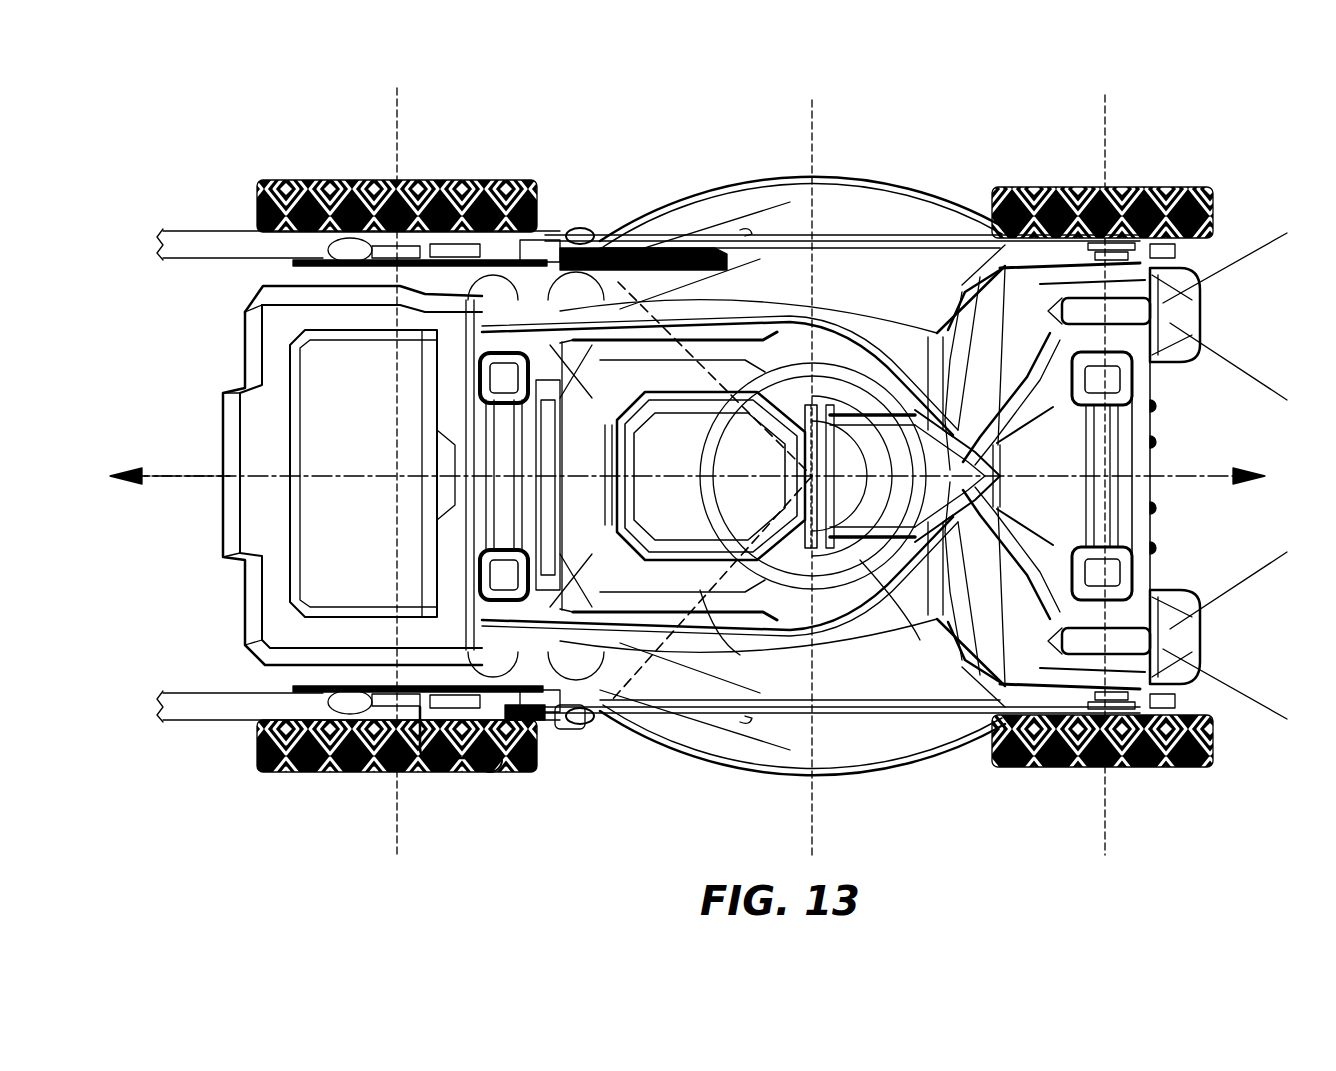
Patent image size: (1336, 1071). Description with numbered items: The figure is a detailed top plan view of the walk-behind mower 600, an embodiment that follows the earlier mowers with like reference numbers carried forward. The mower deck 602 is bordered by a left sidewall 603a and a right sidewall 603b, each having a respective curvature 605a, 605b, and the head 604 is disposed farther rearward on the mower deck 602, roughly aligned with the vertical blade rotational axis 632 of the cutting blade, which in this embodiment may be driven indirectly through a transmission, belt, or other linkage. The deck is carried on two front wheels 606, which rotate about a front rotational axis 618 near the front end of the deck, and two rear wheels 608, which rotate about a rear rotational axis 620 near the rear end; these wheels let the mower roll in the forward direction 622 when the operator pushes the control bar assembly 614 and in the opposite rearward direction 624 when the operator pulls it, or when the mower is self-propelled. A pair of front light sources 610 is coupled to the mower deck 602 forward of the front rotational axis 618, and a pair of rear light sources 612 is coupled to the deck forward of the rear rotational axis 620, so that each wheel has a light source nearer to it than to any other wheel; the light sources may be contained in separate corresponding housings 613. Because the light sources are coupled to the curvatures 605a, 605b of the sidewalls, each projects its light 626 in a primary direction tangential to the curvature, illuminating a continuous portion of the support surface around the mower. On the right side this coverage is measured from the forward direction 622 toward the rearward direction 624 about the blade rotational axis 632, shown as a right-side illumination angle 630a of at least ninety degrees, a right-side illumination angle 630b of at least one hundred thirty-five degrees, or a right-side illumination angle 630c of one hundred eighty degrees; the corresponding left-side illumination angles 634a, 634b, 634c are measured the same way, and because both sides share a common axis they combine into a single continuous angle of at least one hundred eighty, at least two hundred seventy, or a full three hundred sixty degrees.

The walk-behind mower 600 is at (286, 104).
The mower deck 602 is at (936, 655).
The left sidewall 603a is at (838, 182).
The right sidewall 603b is at (836, 780).
The head 604 is at (692, 628).
The curvature of left sidewall 605a is at (718, 190).
The curvature of right sidewall 605b is at (735, 762).
The front wheels 606 is at (1180, 188).
The rear wheels 608 is at (322, 180).
The front light sources 610 is at (1138, 272).
The rear light sources 612 is at (600, 238).
The housings 613 is at (562, 236).
The control bar assembly 614 is at (215, 245).
The front rotational axis 618 is at (1096, 155).
The rear rotational axis 620 is at (399, 142).
The forward direction 622 is at (1215, 475).
The rearward direction 624 is at (184, 474).
The light 626 is at (660, 190).
The right-side illumination angle 630a is at (860, 598).
The right-side illumination angle 630b is at (726, 602).
The right-side illumination angle 630c is at (548, 518).
The blade rotational axis 632 is at (1150, 450).
The left-side illumination angle 634a is at (896, 445).
The left-side illumination angle 634b is at (790, 412).
The left-side illumination angle 634c is at (556, 406).